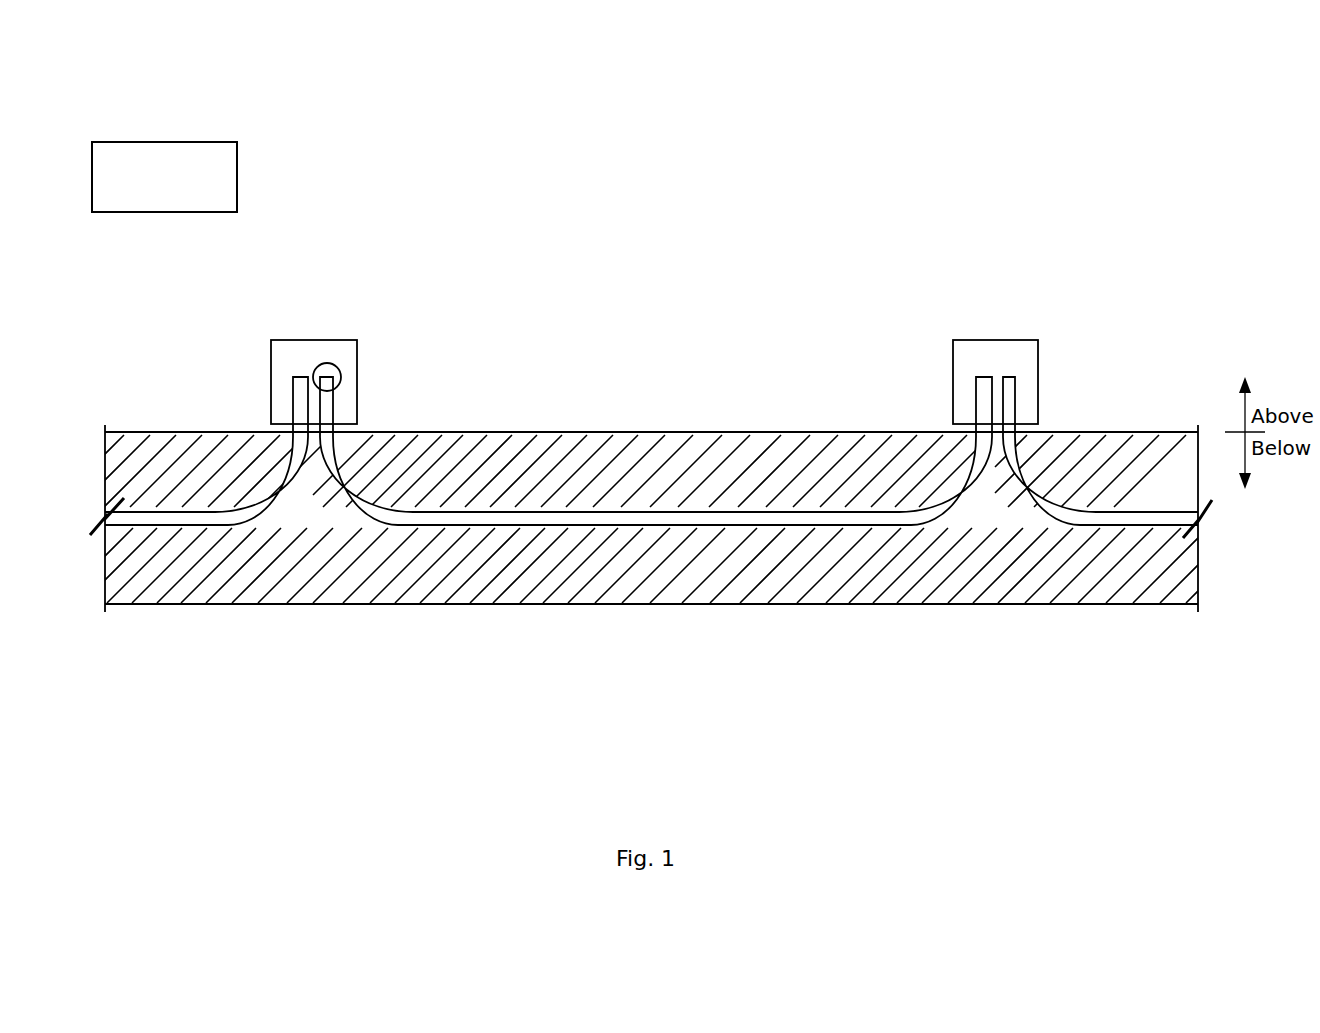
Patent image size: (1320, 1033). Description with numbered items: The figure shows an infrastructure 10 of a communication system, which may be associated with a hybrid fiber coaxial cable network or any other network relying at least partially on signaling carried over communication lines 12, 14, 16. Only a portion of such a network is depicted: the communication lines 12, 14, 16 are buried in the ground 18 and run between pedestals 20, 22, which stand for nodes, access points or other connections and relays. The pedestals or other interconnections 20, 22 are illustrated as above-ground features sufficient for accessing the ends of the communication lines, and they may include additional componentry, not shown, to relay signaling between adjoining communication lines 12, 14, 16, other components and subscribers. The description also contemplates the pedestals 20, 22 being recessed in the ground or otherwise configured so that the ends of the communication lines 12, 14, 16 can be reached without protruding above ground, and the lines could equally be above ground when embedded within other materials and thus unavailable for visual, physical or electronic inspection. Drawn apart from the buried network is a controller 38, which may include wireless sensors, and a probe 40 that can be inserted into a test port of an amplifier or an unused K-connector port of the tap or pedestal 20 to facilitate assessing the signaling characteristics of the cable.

The infrastructure 10 is at (1092, 88).
The communication line 12 is at (188, 525).
The communication line 14 is at (500, 525).
The communication line 16 is at (1112, 525).
The ground 18 is at (632, 585).
The pedestal 20 is at (345, 340).
The pedestal 22 is at (1022, 340).
The controller 38 is at (213, 142).
The probe 40 is at (333, 364).